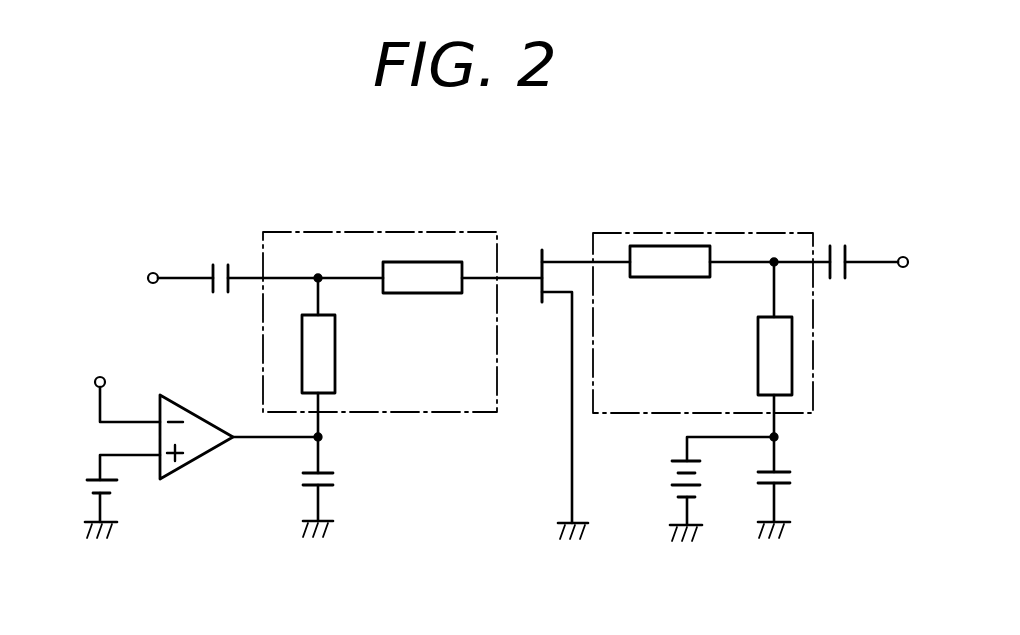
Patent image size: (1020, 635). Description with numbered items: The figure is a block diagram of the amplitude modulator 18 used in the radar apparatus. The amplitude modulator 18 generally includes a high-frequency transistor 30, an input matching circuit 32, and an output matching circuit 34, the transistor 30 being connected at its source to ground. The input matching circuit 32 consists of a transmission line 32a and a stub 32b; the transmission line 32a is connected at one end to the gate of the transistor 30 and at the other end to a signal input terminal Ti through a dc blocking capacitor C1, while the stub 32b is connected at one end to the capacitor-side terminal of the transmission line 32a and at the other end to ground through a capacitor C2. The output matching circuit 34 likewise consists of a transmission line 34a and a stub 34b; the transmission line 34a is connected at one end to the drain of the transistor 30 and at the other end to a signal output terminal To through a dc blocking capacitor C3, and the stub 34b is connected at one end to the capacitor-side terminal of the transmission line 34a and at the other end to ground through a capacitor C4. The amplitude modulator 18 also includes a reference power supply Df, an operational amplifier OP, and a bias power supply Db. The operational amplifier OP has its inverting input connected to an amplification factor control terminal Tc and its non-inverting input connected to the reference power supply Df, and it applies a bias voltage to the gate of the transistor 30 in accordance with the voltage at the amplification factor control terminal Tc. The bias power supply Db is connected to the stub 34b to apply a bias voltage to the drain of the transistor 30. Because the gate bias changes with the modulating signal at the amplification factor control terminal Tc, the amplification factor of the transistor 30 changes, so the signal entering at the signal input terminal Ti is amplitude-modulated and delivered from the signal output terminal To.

The amplitude modulator 18 is at (736, 187).
The high-frequency transistor 30 is at (540, 252).
The input matching circuit 32 is at (327, 232).
The transmission line 32a is at (450, 294).
The stub 32b is at (337, 367).
The output matching circuit 34 is at (677, 233).
The transmission line 34a is at (668, 278).
The stub 34b is at (758, 375).
The signal input terminal Ti is at (163, 277).
The signal output terminal To is at (923, 262).
The amplification factor control terminal Tc is at (124, 380).
The dc blocking capacitor C1 is at (210, 272).
The capacitor C2 is at (325, 473).
The dc blocking capacitor C3 is at (852, 247).
The capacitor C4 is at (785, 472).
The operational amplifier OP is at (200, 411).
The reference power supply Df is at (92, 478).
The bias power supply Db is at (683, 461).